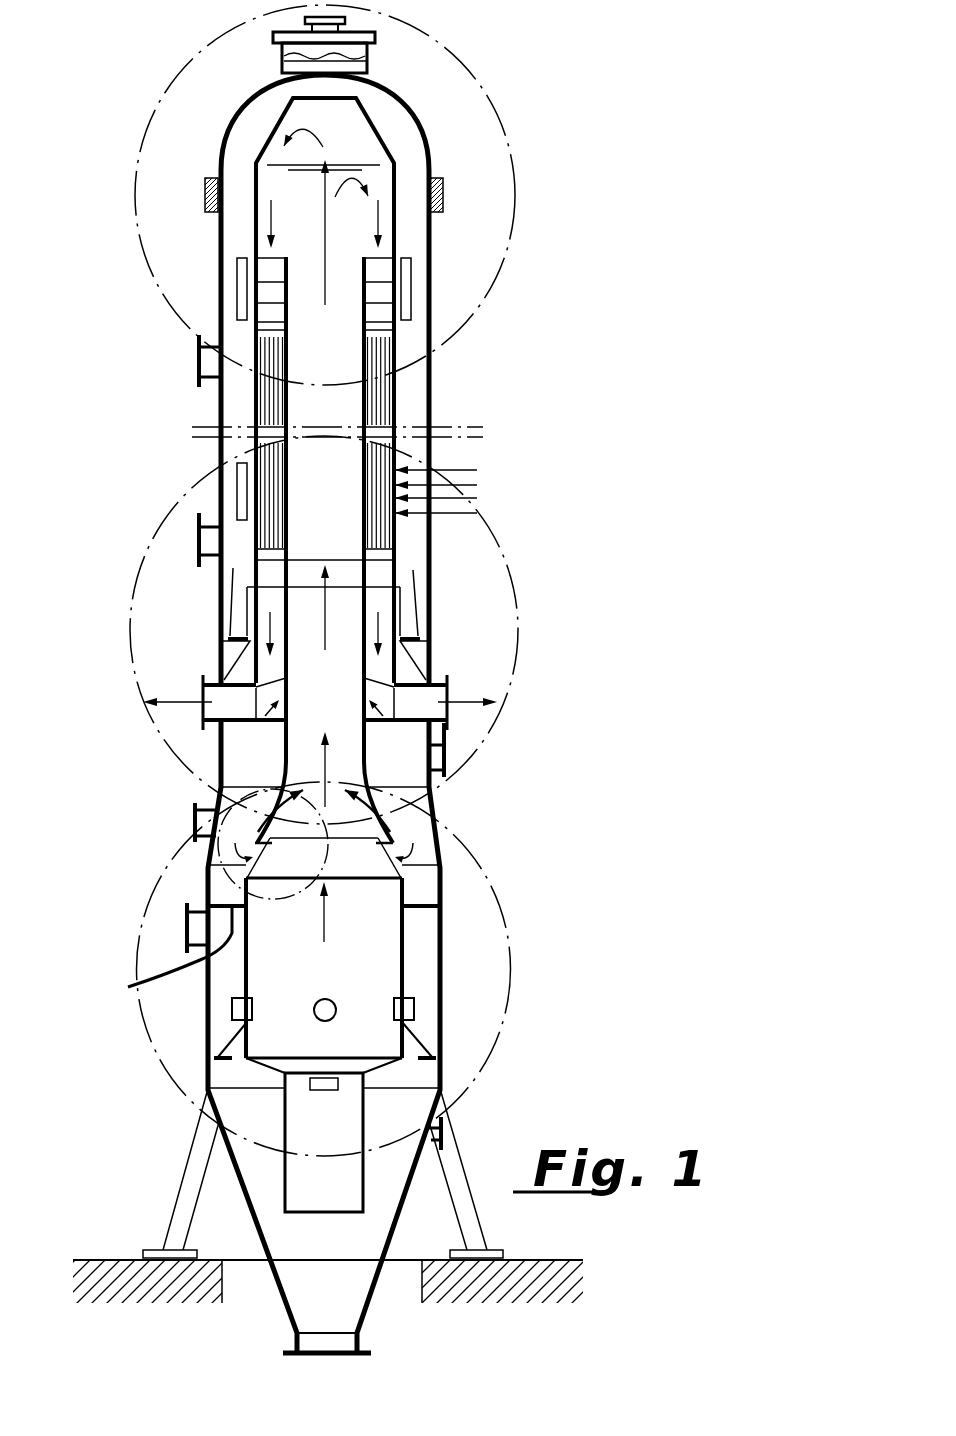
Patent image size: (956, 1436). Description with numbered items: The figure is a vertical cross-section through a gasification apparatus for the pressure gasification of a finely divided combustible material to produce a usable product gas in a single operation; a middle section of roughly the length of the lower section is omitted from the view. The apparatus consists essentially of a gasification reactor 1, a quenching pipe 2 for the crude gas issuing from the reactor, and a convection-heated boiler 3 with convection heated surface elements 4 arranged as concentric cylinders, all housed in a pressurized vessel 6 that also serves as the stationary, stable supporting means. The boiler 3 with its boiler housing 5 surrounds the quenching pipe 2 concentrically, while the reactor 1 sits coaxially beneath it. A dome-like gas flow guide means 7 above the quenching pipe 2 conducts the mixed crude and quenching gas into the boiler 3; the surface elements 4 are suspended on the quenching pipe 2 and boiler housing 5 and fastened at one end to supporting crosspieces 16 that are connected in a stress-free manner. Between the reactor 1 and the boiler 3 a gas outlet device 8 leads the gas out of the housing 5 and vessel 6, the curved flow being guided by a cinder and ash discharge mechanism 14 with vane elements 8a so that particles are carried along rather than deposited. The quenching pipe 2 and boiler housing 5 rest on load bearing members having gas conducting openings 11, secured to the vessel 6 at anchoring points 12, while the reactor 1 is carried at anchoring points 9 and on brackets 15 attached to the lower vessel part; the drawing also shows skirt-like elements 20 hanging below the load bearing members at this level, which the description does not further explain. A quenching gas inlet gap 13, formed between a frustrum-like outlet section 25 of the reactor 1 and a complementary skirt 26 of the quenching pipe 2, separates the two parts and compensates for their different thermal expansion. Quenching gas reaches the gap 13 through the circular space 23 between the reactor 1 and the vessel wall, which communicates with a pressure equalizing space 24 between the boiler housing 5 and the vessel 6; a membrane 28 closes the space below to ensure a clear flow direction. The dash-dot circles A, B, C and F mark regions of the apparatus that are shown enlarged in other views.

The gasification reactor 1 is at (383, 955).
The quenching pipe 2 is at (348, 745).
The convection-heated boiler 3 is at (383, 620).
The convection heated surface elements 4 is at (265, 403).
The boiler housing 5 is at (394, 533).
The pressurized vessel 6 is at (433, 303).
The gas flow guide means 7 is at (360, 133).
The gas outlet device 8 is at (214, 695).
The vane elements 8a is at (373, 698).
The anchoring points 9 is at (217, 1067).
The gas conducting openings 11 is at (268, 573).
The anchoring points 12 is at (227, 653).
The quenching gas inlet gap 13 is at (393, 838).
The mechanism for discharge of cinders and/or ash particles 14 is at (262, 722).
The brackets 15 is at (437, 1053).
The supporting crosspieces 16 is at (383, 333).
The skirts 20 is at (240, 617).
The circular space 23 is at (232, 892).
The pressure equalizing space 24 is at (258, 447).
The outlet section 25 is at (259, 856).
The skirt 26 is at (186, 815).
The membrane 28 is at (160, 963).
The upper zone A is at (483, 88).
The middle zone B is at (503, 532).
The lower zone C is at (493, 895).
The circulation zone F is at (232, 887).